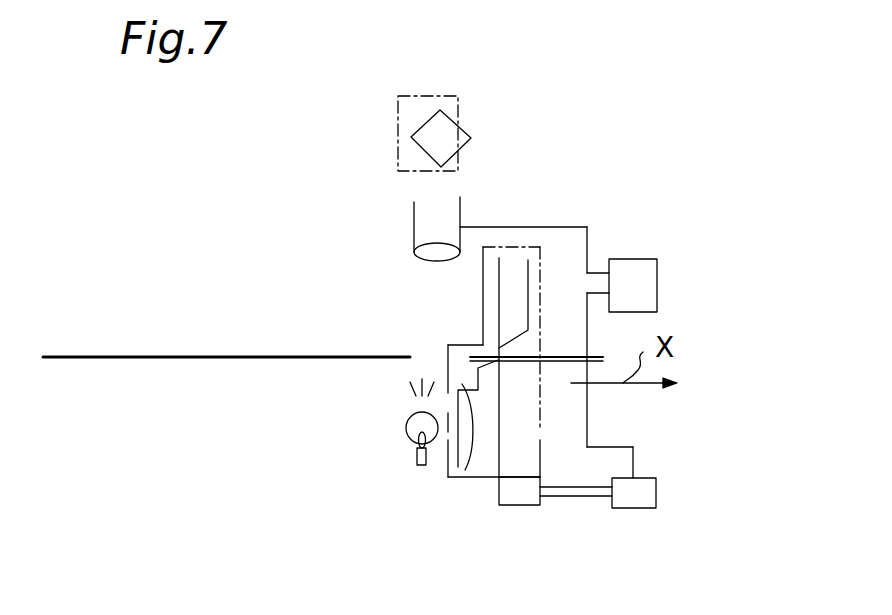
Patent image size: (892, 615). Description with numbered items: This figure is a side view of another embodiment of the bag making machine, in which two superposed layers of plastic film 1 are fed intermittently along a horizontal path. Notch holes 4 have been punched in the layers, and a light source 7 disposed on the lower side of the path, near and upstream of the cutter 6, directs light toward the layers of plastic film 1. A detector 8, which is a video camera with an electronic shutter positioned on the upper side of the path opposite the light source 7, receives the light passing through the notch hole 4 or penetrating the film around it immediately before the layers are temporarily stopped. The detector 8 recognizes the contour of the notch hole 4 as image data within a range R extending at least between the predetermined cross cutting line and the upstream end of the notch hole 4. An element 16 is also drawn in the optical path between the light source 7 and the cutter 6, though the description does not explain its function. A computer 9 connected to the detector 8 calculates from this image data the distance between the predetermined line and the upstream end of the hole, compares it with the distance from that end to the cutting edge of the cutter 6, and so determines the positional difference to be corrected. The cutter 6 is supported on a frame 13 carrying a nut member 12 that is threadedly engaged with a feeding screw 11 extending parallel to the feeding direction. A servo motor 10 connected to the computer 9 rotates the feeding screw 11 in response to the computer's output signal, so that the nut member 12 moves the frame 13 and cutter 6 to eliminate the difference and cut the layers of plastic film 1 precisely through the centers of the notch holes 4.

The layers of plastic film 1 is at (257, 357).
The range R is at (398, 118).
The notch hole 4 is at (443, 152).
The detector 8 is at (414, 217).
The cutter 6 is at (517, 282).
The frame 13 is at (540, 430).
The lens 16 is at (465, 470).
The light source 7 is at (405, 425).
The computer 9 is at (657, 288).
The nut member 12 is at (522, 497).
The feeding screw 11 is at (588, 497).
The servo motor 10 is at (656, 492).